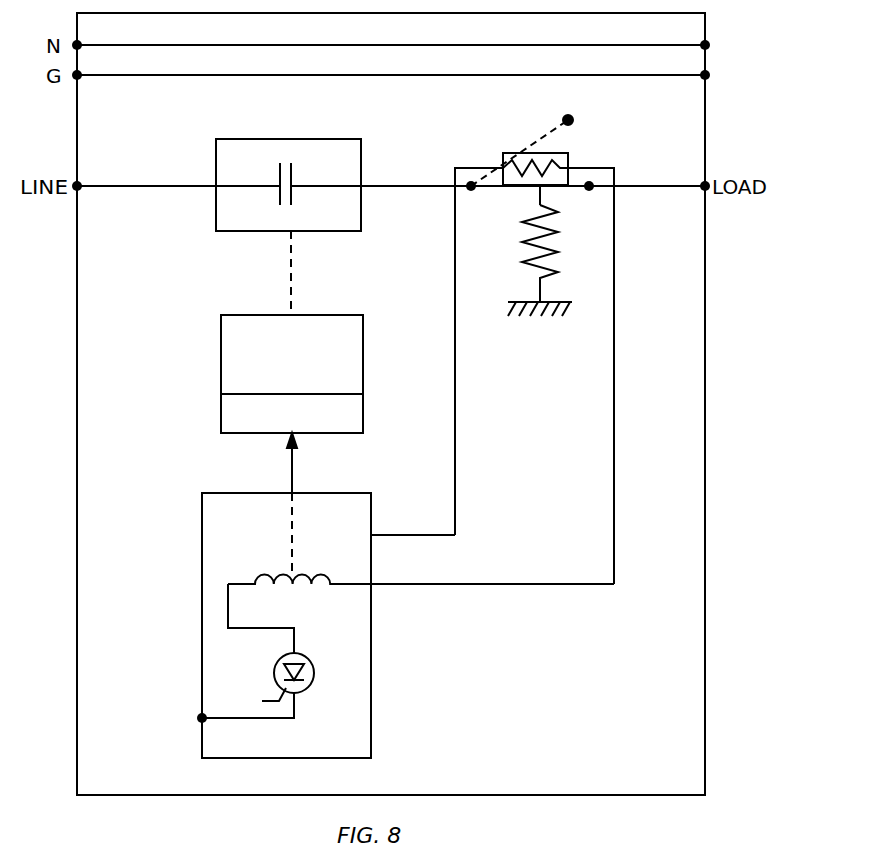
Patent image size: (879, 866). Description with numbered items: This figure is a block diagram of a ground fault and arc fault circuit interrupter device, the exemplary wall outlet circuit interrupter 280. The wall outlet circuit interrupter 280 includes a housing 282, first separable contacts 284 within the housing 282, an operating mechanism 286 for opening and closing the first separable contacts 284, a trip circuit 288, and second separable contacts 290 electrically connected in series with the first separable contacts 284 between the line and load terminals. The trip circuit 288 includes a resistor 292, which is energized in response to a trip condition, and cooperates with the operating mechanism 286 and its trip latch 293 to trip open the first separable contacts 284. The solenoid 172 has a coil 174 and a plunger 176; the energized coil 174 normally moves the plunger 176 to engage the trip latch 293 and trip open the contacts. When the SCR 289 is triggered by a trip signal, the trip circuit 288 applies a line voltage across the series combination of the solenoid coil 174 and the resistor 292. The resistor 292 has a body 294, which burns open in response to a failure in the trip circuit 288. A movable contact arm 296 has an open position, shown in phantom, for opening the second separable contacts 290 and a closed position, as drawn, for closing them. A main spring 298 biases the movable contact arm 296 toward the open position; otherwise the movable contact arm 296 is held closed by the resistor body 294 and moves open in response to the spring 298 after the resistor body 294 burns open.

The wall outlet circuit interrupter 280 is at (619, 835).
The housing 282 is at (706, 690).
The first separable contacts 284 is at (363, 165).
The operating mechanism 286 is at (365, 362).
The trip latch 293 is at (365, 416).
The plunger 176 is at (293, 467).
The coil 174 is at (277, 575).
The solenoid 172 is at (348, 602).
The SCR 289 is at (310, 660).
The trip circuit 288 is at (373, 741).
The second separable contacts 290 is at (590, 116).
The resistor 292 is at (512, 170).
The resistor body 294 is at (548, 153).
The movable contact arm 296 is at (545, 137).
The main spring 298 is at (518, 262).